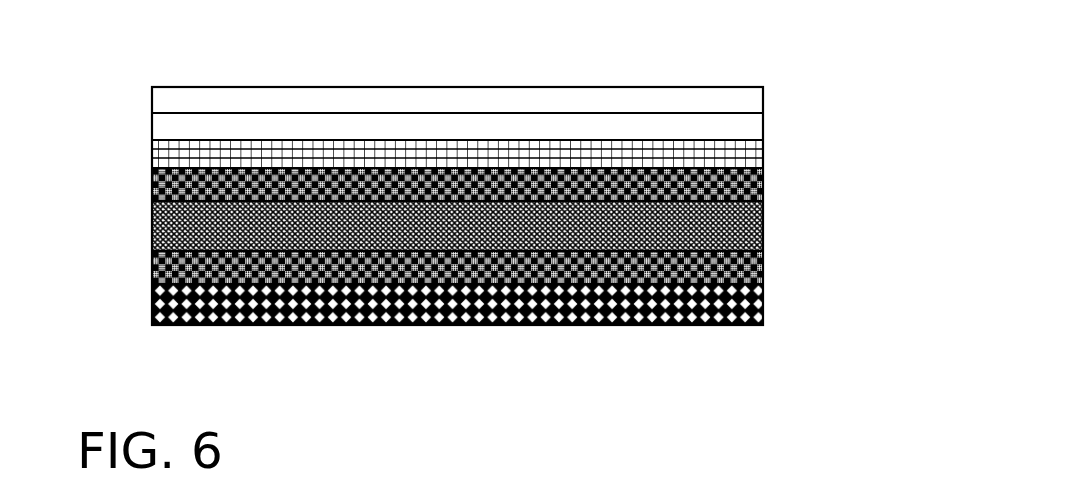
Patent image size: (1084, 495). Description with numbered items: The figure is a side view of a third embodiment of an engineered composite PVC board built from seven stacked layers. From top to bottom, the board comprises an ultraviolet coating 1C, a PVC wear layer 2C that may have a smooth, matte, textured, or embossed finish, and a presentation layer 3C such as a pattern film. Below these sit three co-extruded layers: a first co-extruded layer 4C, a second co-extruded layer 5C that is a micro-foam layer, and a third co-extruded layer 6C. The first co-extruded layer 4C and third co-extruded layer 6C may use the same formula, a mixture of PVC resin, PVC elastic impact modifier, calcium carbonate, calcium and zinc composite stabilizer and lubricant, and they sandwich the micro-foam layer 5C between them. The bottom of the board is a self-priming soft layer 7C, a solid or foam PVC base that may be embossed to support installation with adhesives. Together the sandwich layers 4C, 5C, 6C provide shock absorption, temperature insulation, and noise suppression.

The ultraviolet (UV) coating 1C is at (765, 101).
The PVC wear layer 2C is at (765, 127).
The presentation layer 3C is at (765, 154).
The first co-extruded layer 4C is at (765, 185).
The second co-extruded layer 5C is at (765, 227).
The third co-extruded layer 6C is at (765, 269).
The self-priming soft layer 7C is at (765, 303).